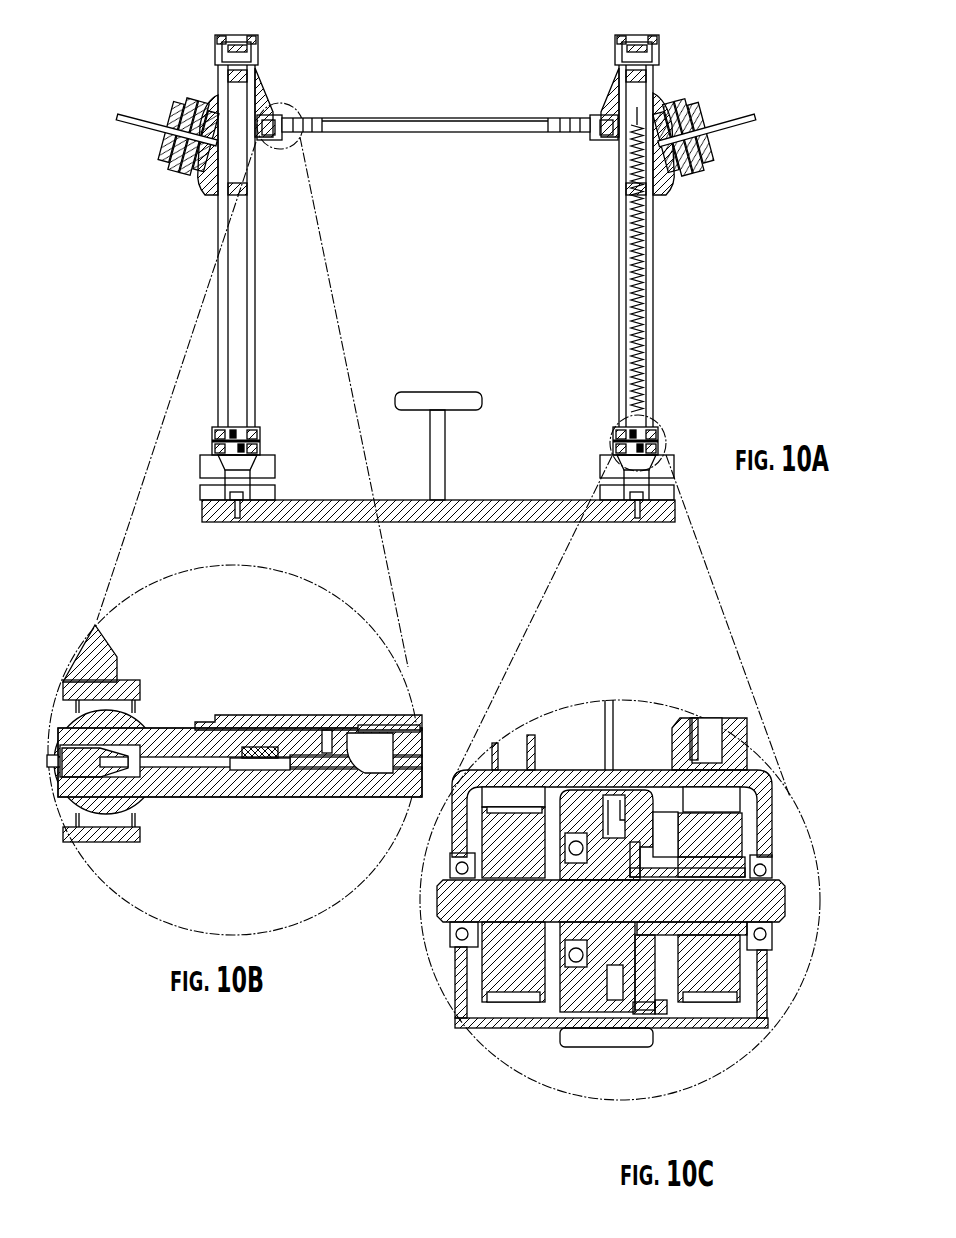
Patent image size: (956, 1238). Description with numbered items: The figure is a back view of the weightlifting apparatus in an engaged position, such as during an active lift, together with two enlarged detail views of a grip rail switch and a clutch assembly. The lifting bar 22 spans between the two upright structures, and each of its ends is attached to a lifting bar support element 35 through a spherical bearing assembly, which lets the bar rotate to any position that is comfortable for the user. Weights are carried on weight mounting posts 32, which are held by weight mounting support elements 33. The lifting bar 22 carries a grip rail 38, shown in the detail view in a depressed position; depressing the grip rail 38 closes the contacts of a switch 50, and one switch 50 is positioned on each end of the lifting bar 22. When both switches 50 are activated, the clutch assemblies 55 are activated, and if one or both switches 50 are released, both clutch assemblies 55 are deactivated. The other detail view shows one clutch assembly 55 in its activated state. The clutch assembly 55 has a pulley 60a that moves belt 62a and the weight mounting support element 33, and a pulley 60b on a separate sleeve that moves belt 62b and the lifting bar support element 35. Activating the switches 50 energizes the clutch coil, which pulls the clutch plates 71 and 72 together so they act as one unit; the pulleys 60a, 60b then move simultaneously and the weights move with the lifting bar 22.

In FIG. 10A, the lifting bar 22 is at (506, 118).
In FIG. 10B, the lifting bar 22 is at (290, 797).
In FIG. 10A, the weight mounting post 32 is at (124, 115).
In FIG. 10A, the weight mounting support element 33 is at (210, 172).
In FIG. 10A, the lifting bar support element 35 is at (262, 95).
In FIG. 10B, the grip rail 38 is at (232, 715).
In FIG. 10B, the switch 50 is at (243, 765).
In FIG. 10C, the clutch assembly 55 is at (657, 833).
In FIG. 10C, the pulley 60a is at (720, 965).
In FIG. 10C, the pulley 60b is at (500, 972).
In FIG. 10C, the belt 62a is at (723, 795).
In FIG. 10C, the belt 62b is at (530, 790).
In FIG. 10C, the clutch plate 71 is at (655, 1002).
In FIG. 10C, the clutch plate 72 is at (645, 1015).